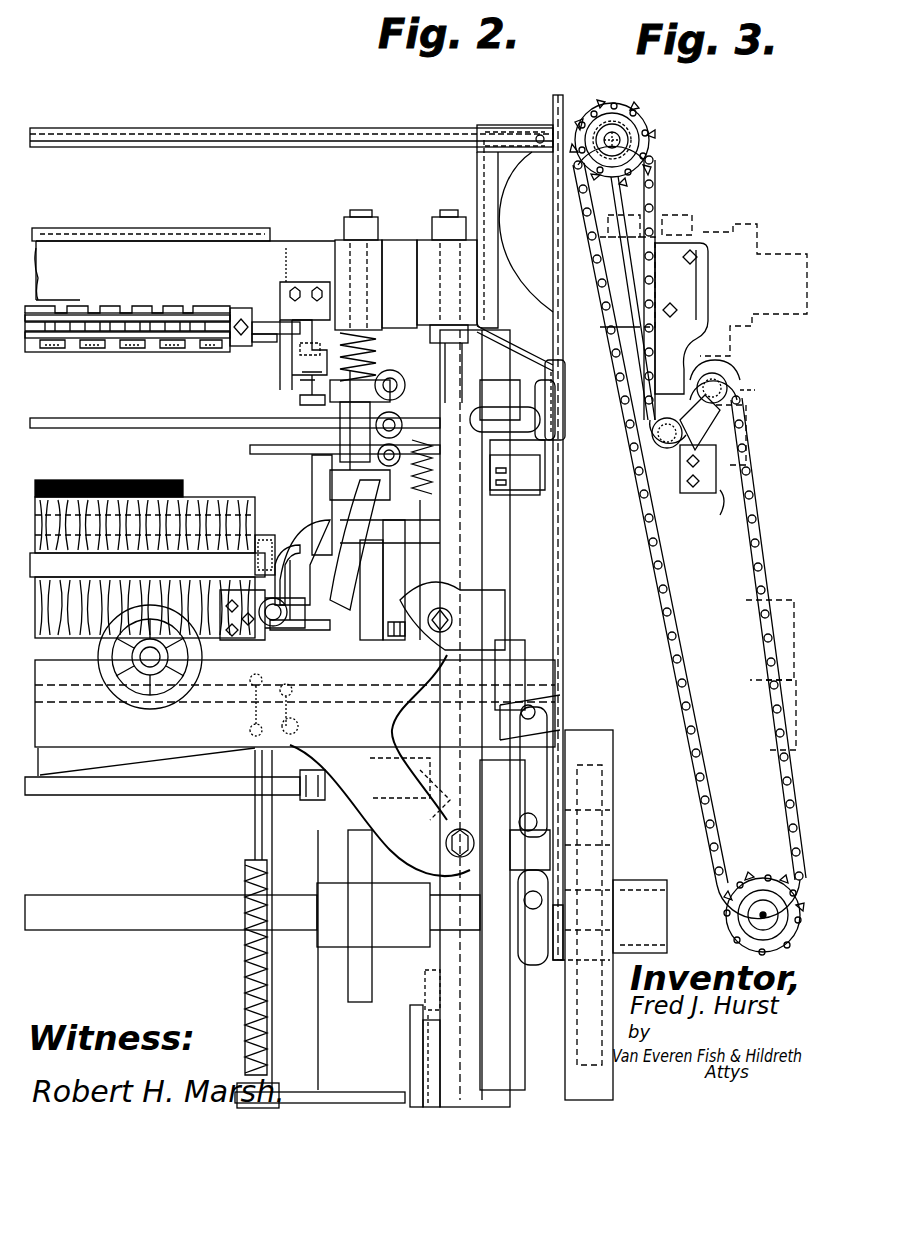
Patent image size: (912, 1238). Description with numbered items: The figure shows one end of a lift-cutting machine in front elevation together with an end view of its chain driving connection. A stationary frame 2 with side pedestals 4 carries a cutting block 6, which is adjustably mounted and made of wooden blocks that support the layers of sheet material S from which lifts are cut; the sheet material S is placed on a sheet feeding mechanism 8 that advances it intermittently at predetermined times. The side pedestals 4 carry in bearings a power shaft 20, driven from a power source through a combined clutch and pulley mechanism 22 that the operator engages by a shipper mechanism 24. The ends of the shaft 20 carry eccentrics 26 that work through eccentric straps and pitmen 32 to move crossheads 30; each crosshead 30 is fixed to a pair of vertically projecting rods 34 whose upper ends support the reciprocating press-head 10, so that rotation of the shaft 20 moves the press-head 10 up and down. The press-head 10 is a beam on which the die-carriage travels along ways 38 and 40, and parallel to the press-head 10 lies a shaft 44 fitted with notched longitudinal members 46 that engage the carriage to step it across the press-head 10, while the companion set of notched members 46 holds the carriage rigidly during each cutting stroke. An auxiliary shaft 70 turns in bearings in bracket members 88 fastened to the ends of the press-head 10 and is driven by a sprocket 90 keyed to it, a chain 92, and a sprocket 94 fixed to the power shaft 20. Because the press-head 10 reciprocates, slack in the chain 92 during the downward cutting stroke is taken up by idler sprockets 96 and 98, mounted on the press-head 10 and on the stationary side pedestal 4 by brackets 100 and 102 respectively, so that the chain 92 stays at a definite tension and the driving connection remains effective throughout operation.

In FIG. 2, the stationary frame 2 is at (178, 733).
In FIG. 2, the side pedestals 4 is at (470, 1010).
In FIG. 2, the cutting block 6 is at (190, 525).
In FIG. 2, the sheet feeding mechanism 8 is at (320, 790).
In FIG. 2, the reciprocating press-head 10 is at (150, 246).
In FIG. 2, the power shaft 20 is at (140, 905).
In FIG. 3, the power shaft 20 is at (752, 918).
In FIG. 2, the combined clutch and pulley mechanism 22 is at (628, 778).
In FIG. 2, the shipper mechanism 24 is at (538, 948).
In FIG. 2, the eccentrics 26 is at (428, 950).
In FIG. 2, the crossheads 30 is at (482, 1050).
In FIG. 2, the pitmen 32 is at (518, 935).
In FIG. 2, the vertically projecting rods 34 is at (450, 383).
In FIG. 2, the way 38 is at (247, 232).
In FIG. 2, the way 40 is at (250, 348).
In FIG. 2, the shaft 44 is at (225, 340).
In FIG. 2, the notched longitudinal members 46 is at (125, 352).
In FIG. 2, the auxiliary shaft 70 is at (265, 130).
In FIG. 3, the auxiliary shaft 70 is at (620, 138).
In FIG. 2, the bracket members 88 is at (478, 182).
In FIG. 3, the bracket members 88 is at (634, 192).
In FIG. 2, the sprocket 90 is at (553, 110).
In FIG. 3, the sprocket 90 is at (633, 138).
In FIG. 3, the chain 92 is at (664, 604).
In FIG. 2, the sprocket 94 is at (558, 960).
In FIG. 3, the sprocket 94 is at (760, 880).
In FIG. 2, the idler sprocket 96 is at (560, 440).
In FIG. 3, the idler sprocket 96 is at (735, 455).
In FIG. 2, the idler sprocket 98 is at (565, 375).
In FIG. 3, the idler sprocket 98 is at (732, 392).
In FIG. 2, the bracket 100 is at (515, 303).
In FIG. 3, the bracket 100 is at (672, 346).
In FIG. 2, the bracket 102 is at (535, 468).
In FIG. 3, the bracket 102 is at (708, 489).
In FIG. 2, the sheet material S is at (108, 482).